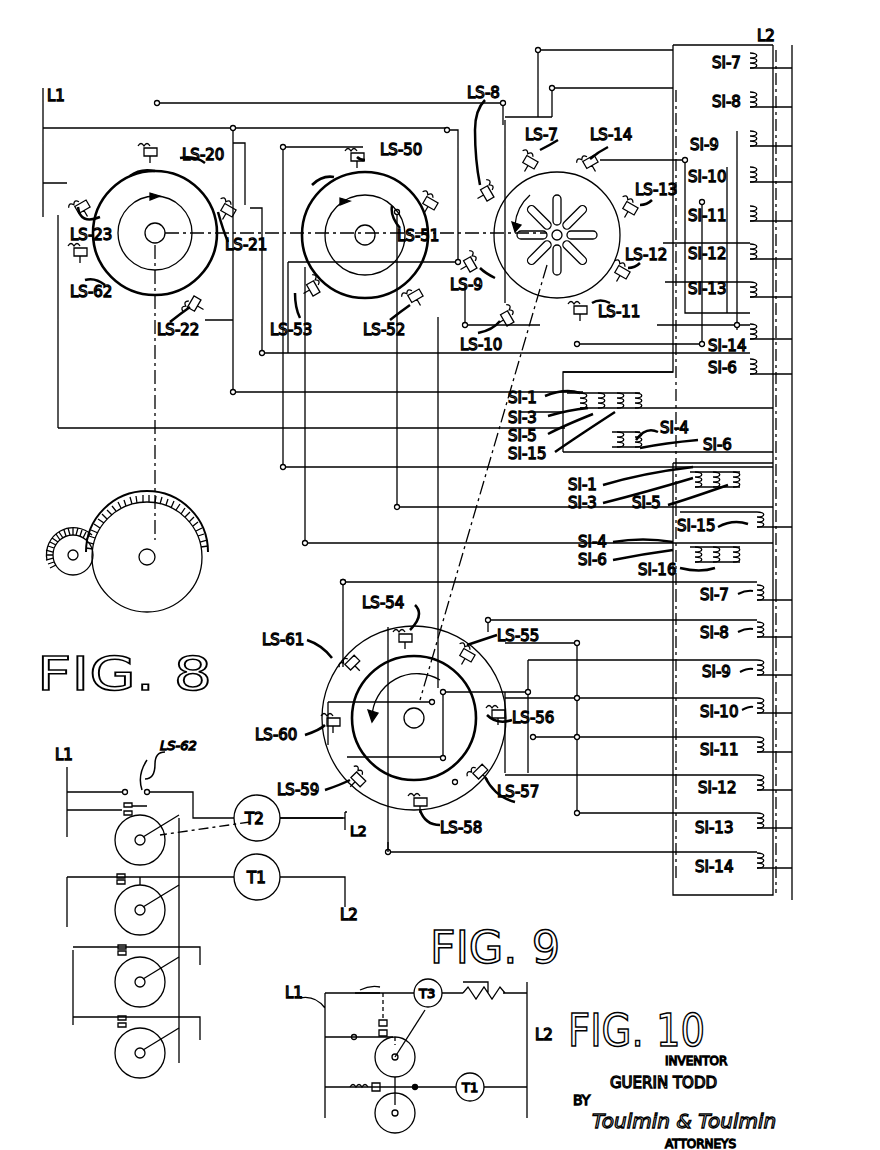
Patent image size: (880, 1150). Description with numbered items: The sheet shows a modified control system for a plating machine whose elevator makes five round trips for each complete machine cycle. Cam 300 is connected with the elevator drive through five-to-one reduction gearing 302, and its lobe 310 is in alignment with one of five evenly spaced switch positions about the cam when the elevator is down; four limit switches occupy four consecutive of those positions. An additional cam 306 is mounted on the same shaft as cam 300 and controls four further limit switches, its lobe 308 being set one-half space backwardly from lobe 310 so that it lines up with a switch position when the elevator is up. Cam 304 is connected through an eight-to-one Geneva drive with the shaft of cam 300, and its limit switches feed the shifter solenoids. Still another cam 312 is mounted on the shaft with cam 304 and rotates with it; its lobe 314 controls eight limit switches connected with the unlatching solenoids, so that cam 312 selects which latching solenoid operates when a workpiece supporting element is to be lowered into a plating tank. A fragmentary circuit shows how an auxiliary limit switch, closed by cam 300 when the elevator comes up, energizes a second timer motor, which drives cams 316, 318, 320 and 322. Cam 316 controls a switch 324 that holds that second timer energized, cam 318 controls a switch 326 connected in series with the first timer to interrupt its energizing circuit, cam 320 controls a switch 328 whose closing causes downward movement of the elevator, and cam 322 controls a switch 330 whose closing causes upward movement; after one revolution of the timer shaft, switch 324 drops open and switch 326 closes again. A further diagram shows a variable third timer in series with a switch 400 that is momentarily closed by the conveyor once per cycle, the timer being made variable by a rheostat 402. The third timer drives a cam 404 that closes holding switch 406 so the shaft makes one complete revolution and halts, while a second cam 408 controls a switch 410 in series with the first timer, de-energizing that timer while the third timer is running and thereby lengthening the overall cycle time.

In FIG. 8, the cam 300 is at (140, 184).
In FIG. 8, the reduction gearing 302 is at (195, 555).
In FIG. 8, the cam 304 is at (617, 199).
In FIG. 8, the additional cam 306 is at (392, 192).
In FIG. 8, the lobe 308 is at (336, 183).
In FIG. 8, the lobe 310 is at (127, 176).
In FIG. 9, the cam 312 is at (530, 697).
In FIG. 9, the lobe 314 is at (367, 662).
In FIG. 9, the cam 316 is at (155, 858).
In FIG. 9, the cam 318 is at (168, 915).
In FIG. 9, the cam 320 is at (168, 990).
In FIG. 9, the cam 322 is at (168, 1055).
In FIG. 9, the switch 324 is at (140, 805).
In FIG. 9, the switch 326 is at (115, 874).
In FIG. 9, the switch 328 is at (120, 948).
In FIG. 9, the switch 330 is at (120, 1018).
In FIG. 10, the switch 400 is at (368, 990).
In FIG. 10, the rheostat 402 is at (485, 997).
In FIG. 10, the cam 404 is at (412, 1048).
In FIG. 10, the holding switch 406 is at (376, 1032).
In FIG. 10, the second cam 408 is at (413, 1122).
In FIG. 10, the switch 410 is at (373, 1082).